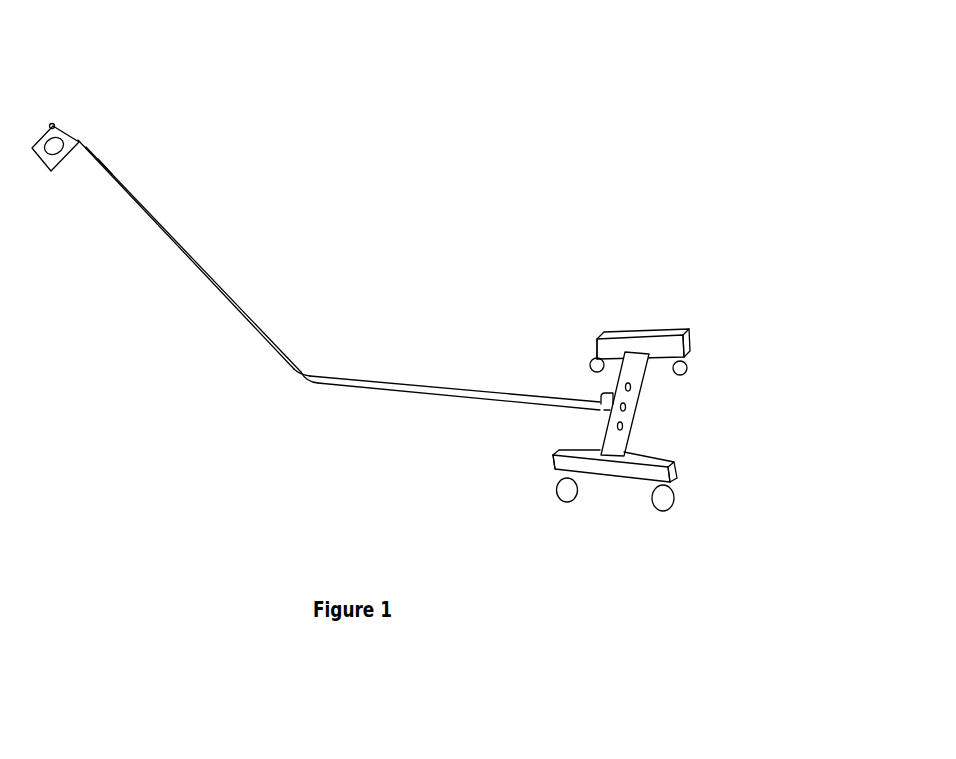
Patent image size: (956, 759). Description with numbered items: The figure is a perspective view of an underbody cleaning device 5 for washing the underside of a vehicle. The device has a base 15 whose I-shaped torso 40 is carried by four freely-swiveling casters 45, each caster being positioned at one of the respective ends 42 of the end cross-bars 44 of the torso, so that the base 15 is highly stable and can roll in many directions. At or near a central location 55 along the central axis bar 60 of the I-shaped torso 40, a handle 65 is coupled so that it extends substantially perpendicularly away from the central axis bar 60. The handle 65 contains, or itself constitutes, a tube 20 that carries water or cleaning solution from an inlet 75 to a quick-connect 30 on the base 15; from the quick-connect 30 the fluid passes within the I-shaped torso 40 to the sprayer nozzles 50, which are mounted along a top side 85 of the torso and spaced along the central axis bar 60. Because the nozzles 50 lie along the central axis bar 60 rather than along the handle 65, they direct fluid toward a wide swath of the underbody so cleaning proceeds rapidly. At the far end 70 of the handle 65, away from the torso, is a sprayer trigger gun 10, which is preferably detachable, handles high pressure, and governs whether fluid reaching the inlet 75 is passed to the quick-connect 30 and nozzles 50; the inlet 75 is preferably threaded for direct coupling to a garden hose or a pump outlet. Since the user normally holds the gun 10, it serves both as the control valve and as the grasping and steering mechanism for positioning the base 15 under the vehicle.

The underbody cleaning device 5 is at (487, 187).
The sprayer trigger gun 10 is at (73, 120).
The base 15 is at (622, 501).
The tube 20 is at (176, 305).
The quick-connect 30 is at (588, 392).
The I-shaped torso 40 is at (637, 330).
The ends 42 is at (598, 332).
The end cross-bars 44 is at (628, 352).
The casters 45 is at (590, 366).
The sprayer nozzles 50 is at (642, 427).
The central location 55 is at (599, 426).
The central axis bar 60 is at (624, 448).
The handle 65 is at (292, 398).
The far end 70 is at (157, 163).
The inlet 75 is at (58, 114).
The top side 85 is at (643, 365).